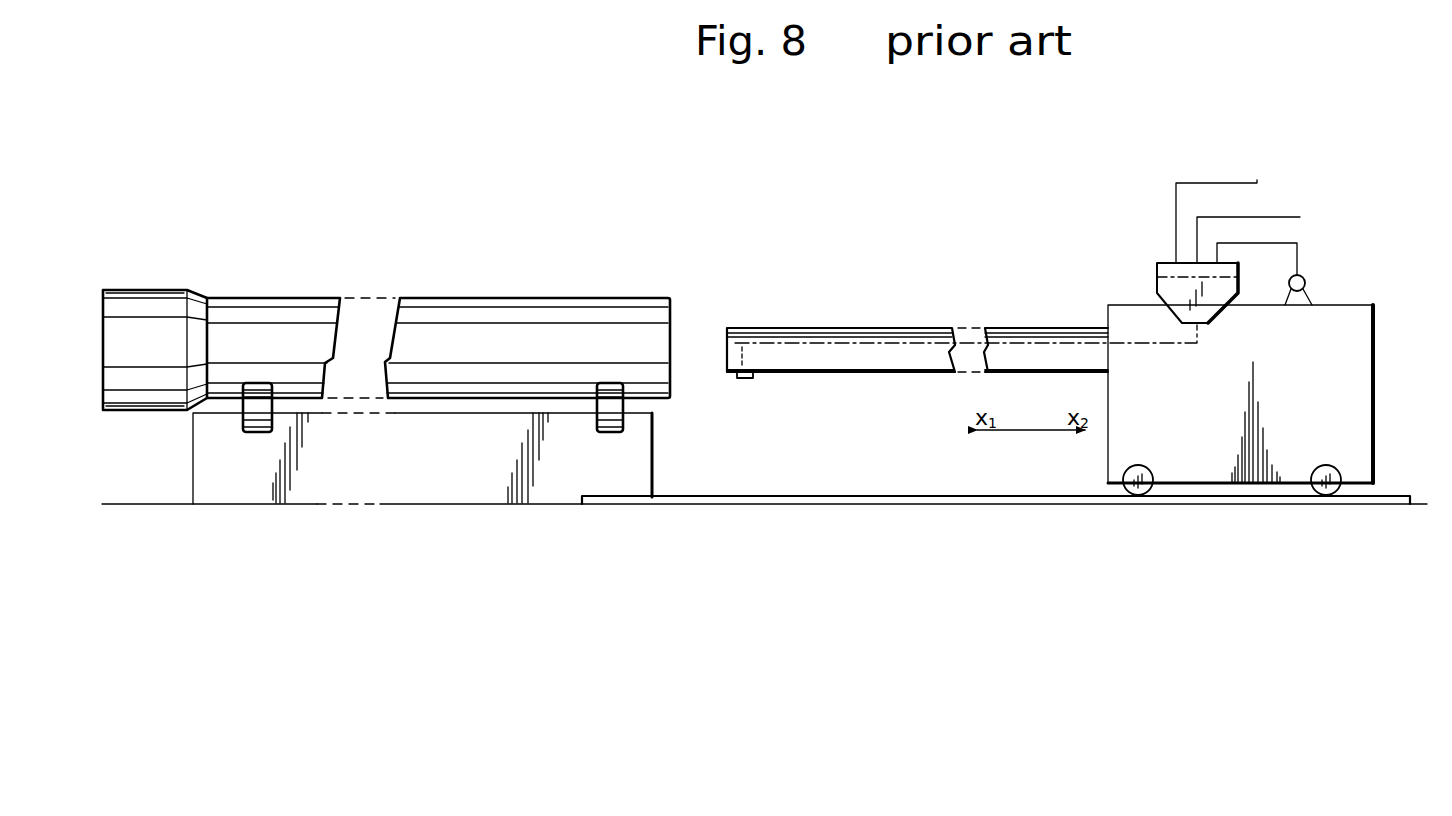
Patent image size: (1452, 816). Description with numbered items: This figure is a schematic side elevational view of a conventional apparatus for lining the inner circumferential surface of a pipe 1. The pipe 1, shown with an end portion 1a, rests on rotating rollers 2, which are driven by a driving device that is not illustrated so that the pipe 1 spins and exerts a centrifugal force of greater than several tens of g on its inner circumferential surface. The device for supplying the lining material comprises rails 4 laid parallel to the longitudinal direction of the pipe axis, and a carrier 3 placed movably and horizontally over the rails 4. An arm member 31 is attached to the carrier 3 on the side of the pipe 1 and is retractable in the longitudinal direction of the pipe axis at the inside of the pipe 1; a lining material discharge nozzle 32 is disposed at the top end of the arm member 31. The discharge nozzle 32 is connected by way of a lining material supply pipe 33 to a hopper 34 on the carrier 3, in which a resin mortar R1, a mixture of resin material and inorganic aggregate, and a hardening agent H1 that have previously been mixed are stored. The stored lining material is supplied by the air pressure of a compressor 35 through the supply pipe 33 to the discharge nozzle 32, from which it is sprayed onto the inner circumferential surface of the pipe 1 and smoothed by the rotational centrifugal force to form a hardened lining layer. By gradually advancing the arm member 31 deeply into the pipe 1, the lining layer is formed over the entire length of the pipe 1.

The flange of tube 1a is at (145, 305).
The pipe 1 is at (483, 317).
The rotating rollers 2 is at (623, 402).
The carrier 3 is at (1360, 390).
The rails 4 is at (818, 495).
The arm member 31 is at (912, 330).
The lining material discharge nozzle 32 is at (743, 378).
The lining material supply pipe 33 is at (867, 343).
The hopper 34 is at (1157, 283).
The compressor 35 is at (1307, 282).
The resin mortar R1 is at (1263, 172).
The hardening agent H1 is at (1303, 210).